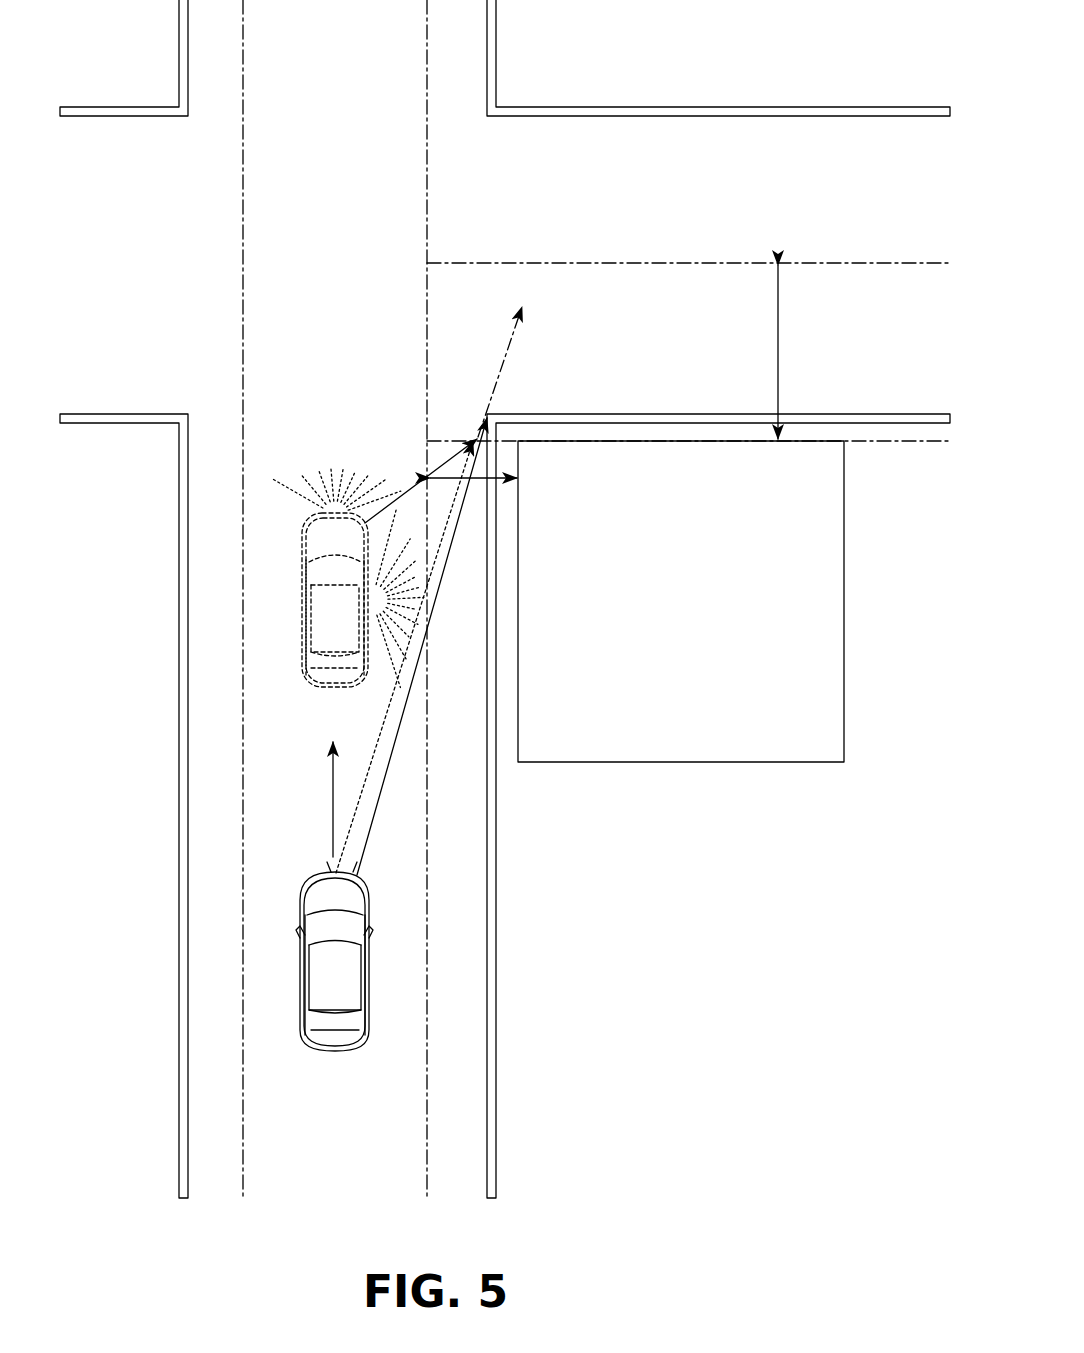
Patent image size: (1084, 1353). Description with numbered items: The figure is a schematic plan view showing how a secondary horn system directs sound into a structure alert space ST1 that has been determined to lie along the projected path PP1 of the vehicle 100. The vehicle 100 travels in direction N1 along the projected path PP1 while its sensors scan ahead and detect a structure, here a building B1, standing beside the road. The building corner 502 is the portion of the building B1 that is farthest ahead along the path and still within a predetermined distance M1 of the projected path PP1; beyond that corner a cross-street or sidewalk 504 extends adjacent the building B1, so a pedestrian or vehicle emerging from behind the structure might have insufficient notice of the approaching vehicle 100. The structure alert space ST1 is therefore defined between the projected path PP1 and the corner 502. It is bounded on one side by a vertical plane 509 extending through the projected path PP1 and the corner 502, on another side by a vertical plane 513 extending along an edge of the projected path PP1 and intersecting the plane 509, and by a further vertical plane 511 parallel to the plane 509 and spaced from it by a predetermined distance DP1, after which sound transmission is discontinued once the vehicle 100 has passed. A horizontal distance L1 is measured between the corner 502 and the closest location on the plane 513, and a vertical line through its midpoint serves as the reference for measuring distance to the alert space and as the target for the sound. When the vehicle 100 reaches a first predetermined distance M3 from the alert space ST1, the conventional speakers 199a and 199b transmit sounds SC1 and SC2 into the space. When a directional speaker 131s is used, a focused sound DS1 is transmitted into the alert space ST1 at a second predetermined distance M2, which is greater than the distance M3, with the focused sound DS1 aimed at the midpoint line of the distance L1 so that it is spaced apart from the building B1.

The vehicle 100 is at (305, 600).
The directional speaker 131s is at (330, 870).
The conventional speaker 199a is at (320, 482).
The conventional speaker 199b is at (383, 593).
The building corner 502 is at (519, 441).
The cross-street or sidewalk 504 is at (508, 408).
The vertical plane 509 is at (900, 442).
The vertical plane 511 is at (850, 262).
The vertical plane 513 is at (425, 209).
The building B1 is at (690, 762).
The predetermined distance DP1 is at (780, 355).
The focused sound DS1 is at (378, 737).
The horizontal distance L1 is at (446, 440).
The predetermined distance M1 is at (508, 484).
The second predetermined distance M2 is at (380, 798).
The first predetermined distance M3 is at (403, 494).
The direction N1 is at (311, 799).
The projected path PP1 is at (242, 1066).
The sound SC1 is at (383, 490).
The sound SC2 is at (420, 655).
The structure alert space ST1 is at (623, 322).